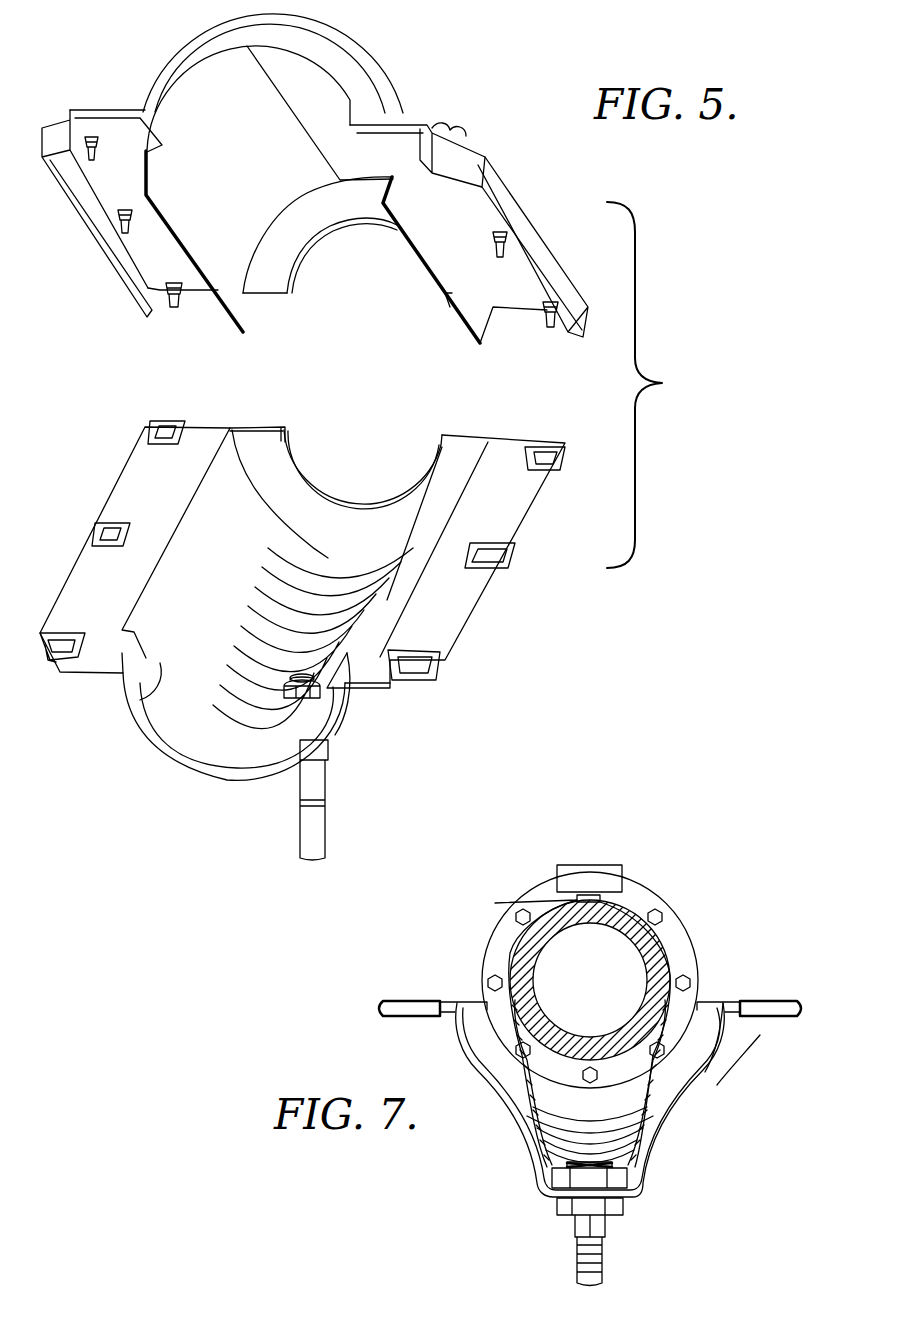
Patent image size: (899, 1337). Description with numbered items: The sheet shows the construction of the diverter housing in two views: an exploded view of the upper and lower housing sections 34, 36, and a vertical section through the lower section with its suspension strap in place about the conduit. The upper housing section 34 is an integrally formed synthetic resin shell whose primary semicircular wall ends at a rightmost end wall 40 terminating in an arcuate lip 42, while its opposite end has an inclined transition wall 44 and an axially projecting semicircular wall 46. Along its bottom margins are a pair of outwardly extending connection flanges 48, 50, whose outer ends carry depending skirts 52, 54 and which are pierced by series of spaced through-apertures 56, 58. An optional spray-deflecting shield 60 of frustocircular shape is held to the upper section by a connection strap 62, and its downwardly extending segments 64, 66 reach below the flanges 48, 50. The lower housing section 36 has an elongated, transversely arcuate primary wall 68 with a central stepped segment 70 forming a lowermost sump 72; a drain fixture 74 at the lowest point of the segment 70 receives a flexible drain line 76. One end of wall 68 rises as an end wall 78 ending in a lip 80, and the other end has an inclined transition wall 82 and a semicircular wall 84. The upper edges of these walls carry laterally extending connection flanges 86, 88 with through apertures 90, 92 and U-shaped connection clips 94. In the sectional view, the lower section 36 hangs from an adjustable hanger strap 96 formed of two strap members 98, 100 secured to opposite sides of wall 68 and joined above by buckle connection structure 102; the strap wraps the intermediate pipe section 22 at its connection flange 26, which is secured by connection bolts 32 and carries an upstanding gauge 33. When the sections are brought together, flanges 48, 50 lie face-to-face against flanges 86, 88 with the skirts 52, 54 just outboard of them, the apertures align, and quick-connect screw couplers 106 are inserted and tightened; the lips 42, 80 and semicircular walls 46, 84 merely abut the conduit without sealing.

In FIG. 7, the intermediate pipe section 22 is at (560, 1050).
In FIG. 7, the connection flange 26 is at (682, 950).
In FIG. 7, the connection bolts 32 is at (645, 925).
In FIG. 7, the upstanding gauge 33 is at (600, 875).
In FIG. 5, the upper housing section 34 is at (405, 88).
In FIG. 5, the lower housing section 36 is at (140, 748).
In FIG. 7, the lower housing section 36 is at (712, 1082).
In FIG. 5, the rightmost end wall 40 is at (360, 218).
In FIG. 5, the arcuate lip 42 is at (300, 272).
In FIG. 5, the inclined transition wall 44 is at (342, 46).
In FIG. 5, the semicircular wall 46 is at (192, 37).
In FIG. 5, the connection flange 48 is at (150, 257).
In FIG. 5, the connection flange 50 is at (520, 297).
In FIG. 5, the depending skirt 52 is at (67, 205).
In FIG. 5, the depending skirt 54 is at (568, 335).
In FIG. 5, the through-apertures 56 is at (124, 208).
In FIG. 5, the through-apertures 58 is at (493, 238).
In FIG. 5, the spray-deflecting shield 60 is at (260, 218).
In FIG. 5, the connection strap 62 is at (300, 108).
In FIG. 5, the downwardly extending segment 64 is at (233, 312).
In FIG. 5, the downwardly extending segment 66 is at (472, 335).
In FIG. 5, the primary wall 68 is at (137, 700).
In FIG. 7, the primary wall 68 is at (467, 1057).
In FIG. 5, the stepped segment 70 is at (285, 575).
In FIG. 7, the stepped segment 70 is at (553, 1145).
In FIG. 7, the sump 72 is at (633, 1178).
In FIG. 5, the drain fixture 74 is at (280, 684).
In FIG. 7, the drain fixture 74 is at (565, 1205).
In FIG. 5, the flexible drain line 76 is at (300, 830).
In FIG. 5, the end wall 78 is at (270, 452).
In FIG. 5, the lip 80 is at (330, 498).
In FIG. 5, the inclined transition wall 82 is at (360, 705).
In FIG. 7, the inclined transition wall 82 is at (705, 1035).
In FIG. 5, the semicircular wall 84 is at (233, 782).
In FIG. 5, the connection flange 86 is at (75, 605).
In FIG. 7, the connection flange 86 is at (748, 1002).
In FIG. 5, the connection flange 88 is at (470, 592).
In FIG. 7, the connection flange 88 is at (445, 1000).
In FIG. 5, the through apertures 90 is at (112, 525).
In FIG. 5, the through apertures 92 is at (487, 548).
In FIG. 5, the U-shaped connection clips 94 is at (90, 540).
In FIG. 7, the U-shaped connection clips 94 is at (375, 1010).
In FIG. 7, the adjustable hanger strap 96 is at (628, 908).
In FIG. 7, the strap member 98 is at (682, 1095).
In FIG. 7, the strap member 100 is at (530, 1093).
In FIG. 7, the buckle connection structure 102 is at (557, 895).
In FIG. 5, the quick-connect screw couplers 106 is at (455, 135).